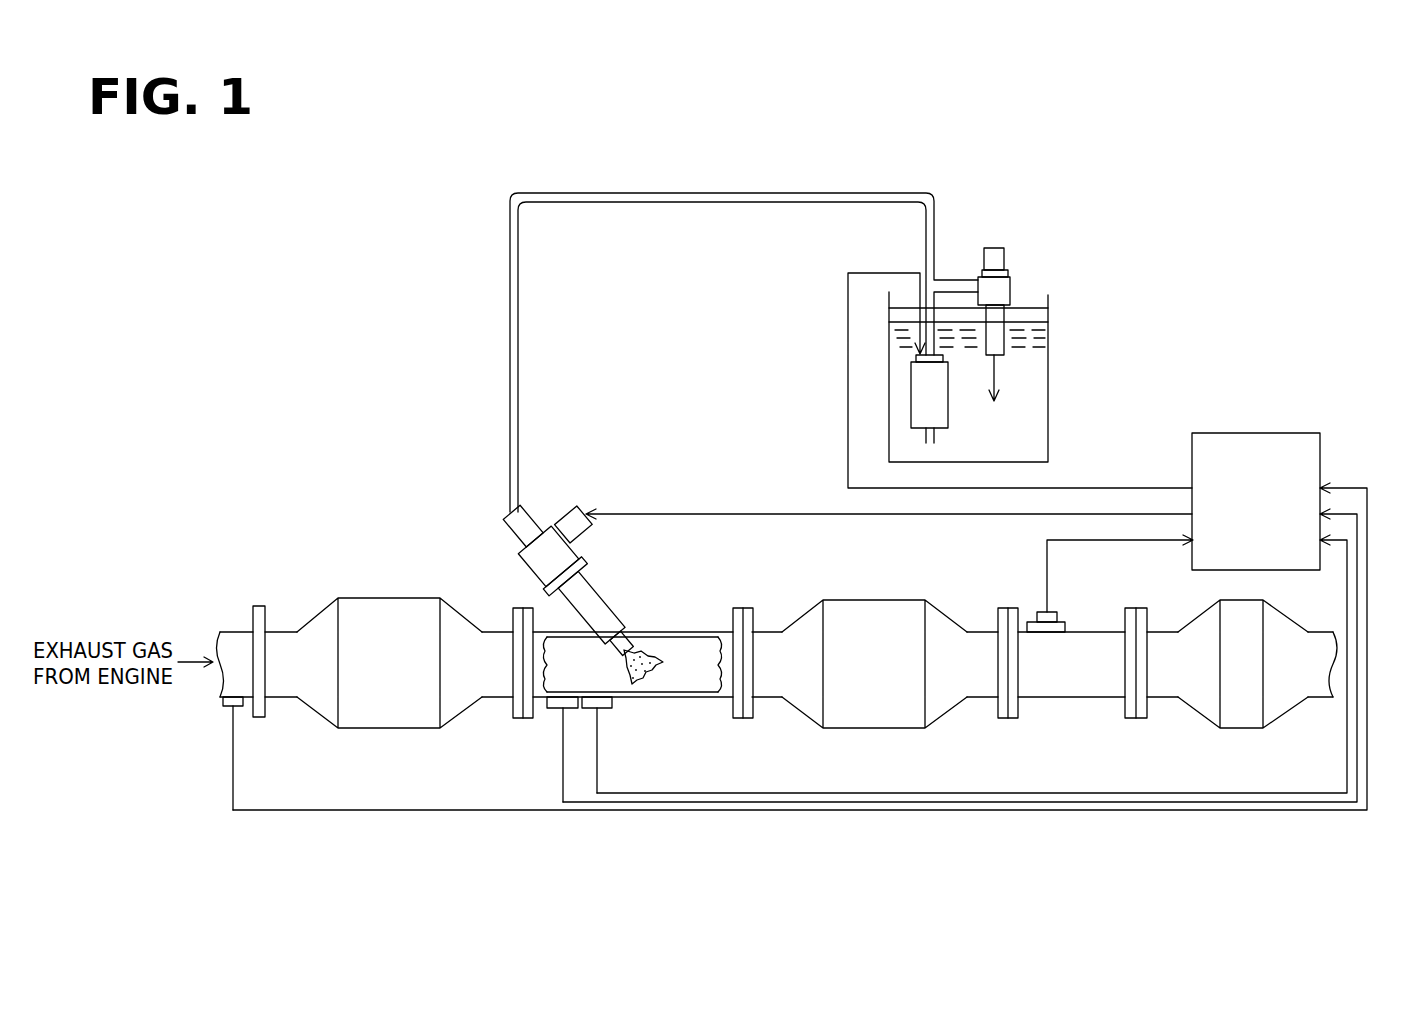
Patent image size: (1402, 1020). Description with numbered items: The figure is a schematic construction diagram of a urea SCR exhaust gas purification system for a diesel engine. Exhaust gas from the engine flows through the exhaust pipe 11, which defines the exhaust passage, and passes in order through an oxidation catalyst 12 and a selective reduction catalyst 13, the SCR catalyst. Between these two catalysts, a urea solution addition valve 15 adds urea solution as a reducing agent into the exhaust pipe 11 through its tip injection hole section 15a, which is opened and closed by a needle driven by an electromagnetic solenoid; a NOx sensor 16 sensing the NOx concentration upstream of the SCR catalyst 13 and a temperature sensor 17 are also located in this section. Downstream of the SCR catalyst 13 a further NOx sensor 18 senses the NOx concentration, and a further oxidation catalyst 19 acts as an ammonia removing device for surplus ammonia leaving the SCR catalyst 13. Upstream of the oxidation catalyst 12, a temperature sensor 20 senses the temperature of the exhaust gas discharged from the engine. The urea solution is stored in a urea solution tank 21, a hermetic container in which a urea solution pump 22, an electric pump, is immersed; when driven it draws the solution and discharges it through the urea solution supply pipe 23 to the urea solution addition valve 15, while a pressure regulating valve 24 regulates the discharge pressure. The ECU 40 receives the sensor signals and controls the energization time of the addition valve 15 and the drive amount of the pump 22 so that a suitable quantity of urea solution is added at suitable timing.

The exhaust pipe 11 is at (689, 694).
The oxidation catalyst 12 is at (390, 598).
The selective reduction catalyst 13 is at (876, 600).
The urea solution addition valve 15 is at (554, 523).
The tip injection hole section 15a is at (638, 646).
The NOx sensor 16 is at (550, 708).
The temperature sensor 17 is at (612, 708).
The NOx sensor 18 is at (1060, 618).
The oxidation catalyst 19 is at (1245, 728).
The temperature sensor 20 is at (223, 708).
The urea solution tank 21 is at (1048, 442).
The urea solution pump 22 is at (911, 397).
The urea solution supply pipe 23 is at (575, 194).
The pressure regulating valve 24 is at (1010, 290).
The ECU 40 is at (1254, 433).